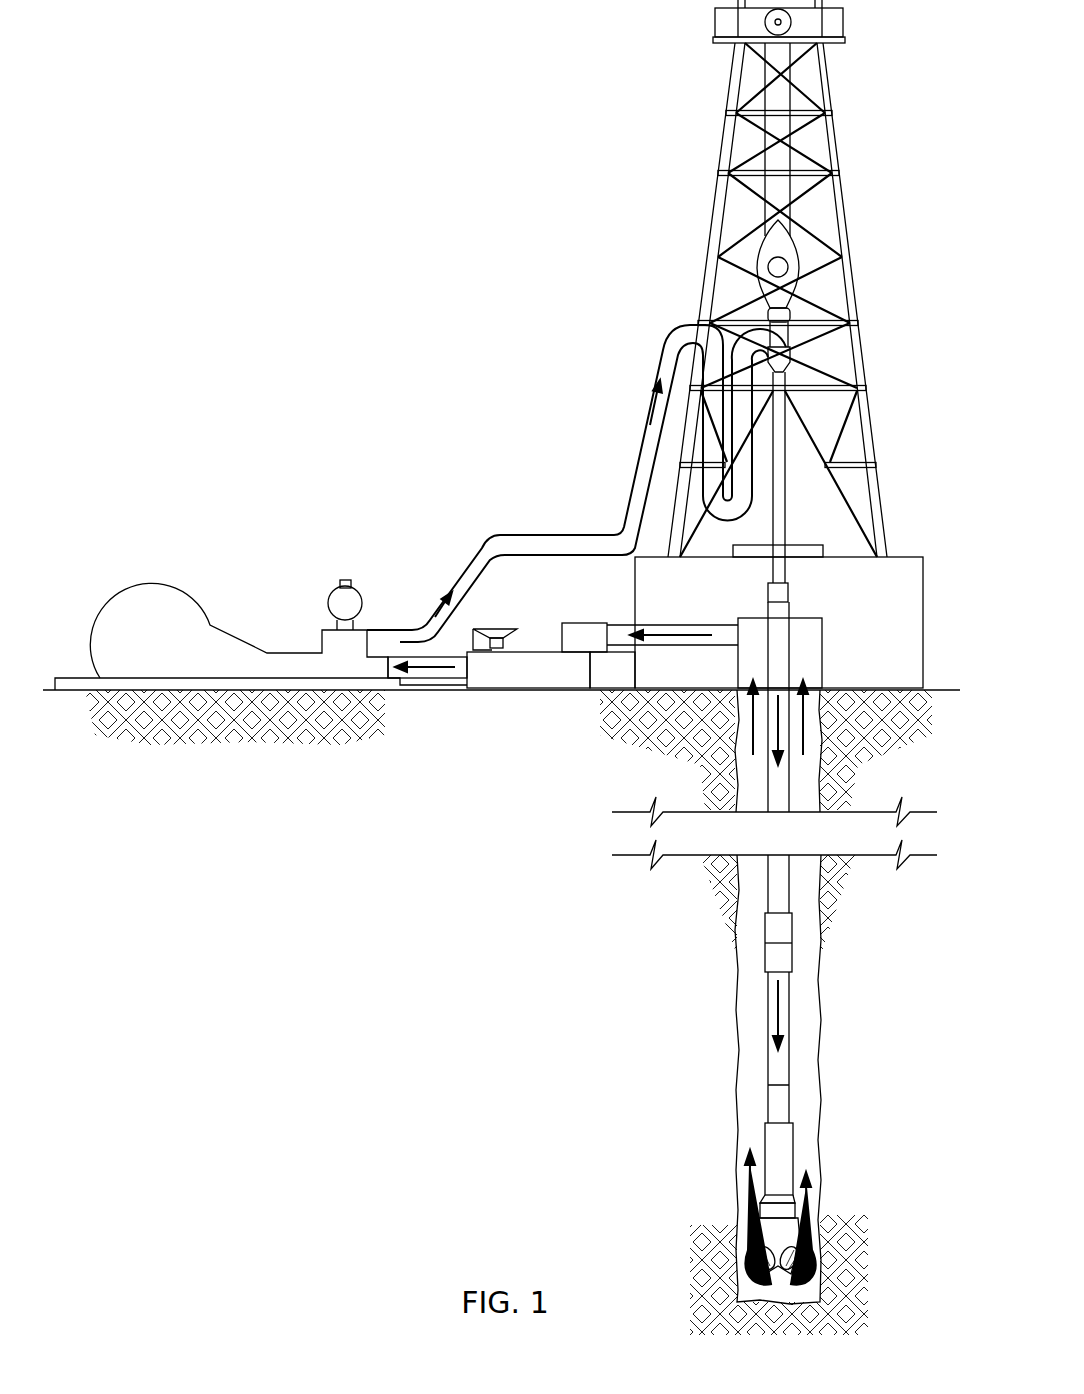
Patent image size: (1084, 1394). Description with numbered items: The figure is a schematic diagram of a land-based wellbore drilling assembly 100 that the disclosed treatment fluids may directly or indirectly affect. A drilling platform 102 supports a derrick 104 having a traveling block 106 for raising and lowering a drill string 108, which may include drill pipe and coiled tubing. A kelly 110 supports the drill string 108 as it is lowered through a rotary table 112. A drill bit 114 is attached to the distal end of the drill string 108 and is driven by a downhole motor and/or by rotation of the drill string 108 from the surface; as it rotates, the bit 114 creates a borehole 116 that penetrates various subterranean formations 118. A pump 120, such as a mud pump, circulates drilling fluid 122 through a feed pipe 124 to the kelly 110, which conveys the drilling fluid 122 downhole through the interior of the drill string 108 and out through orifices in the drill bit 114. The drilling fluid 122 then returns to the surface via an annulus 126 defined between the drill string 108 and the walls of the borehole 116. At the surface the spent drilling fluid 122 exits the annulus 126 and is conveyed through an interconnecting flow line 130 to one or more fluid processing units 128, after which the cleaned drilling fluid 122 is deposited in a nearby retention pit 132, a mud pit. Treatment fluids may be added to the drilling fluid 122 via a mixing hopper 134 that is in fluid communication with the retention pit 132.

The wellbore drilling assembly 100 is at (366, 206).
The drilling platform 102 is at (855, 631).
The derrick 104 is at (858, 300).
The traveling block 106 is at (793, 256).
The drill string 108 is at (767, 1068).
The kelly 110 is at (788, 522).
The rotary table 112 is at (827, 551).
The drill bit 114 is at (803, 1247).
The borehole 116 is at (812, 1028).
The subterranean formations 118 is at (594, 950).
The pump 120 is at (150, 578).
The drilling fluid 122 is at (428, 625).
The feed pipe 124 is at (555, 532).
The annulus 126 is at (812, 1150).
The fluid processing unit 128 is at (583, 622).
The flow line 130 is at (727, 617).
The retention pit 132 is at (525, 690).
The mixing hopper 134 is at (497, 625).